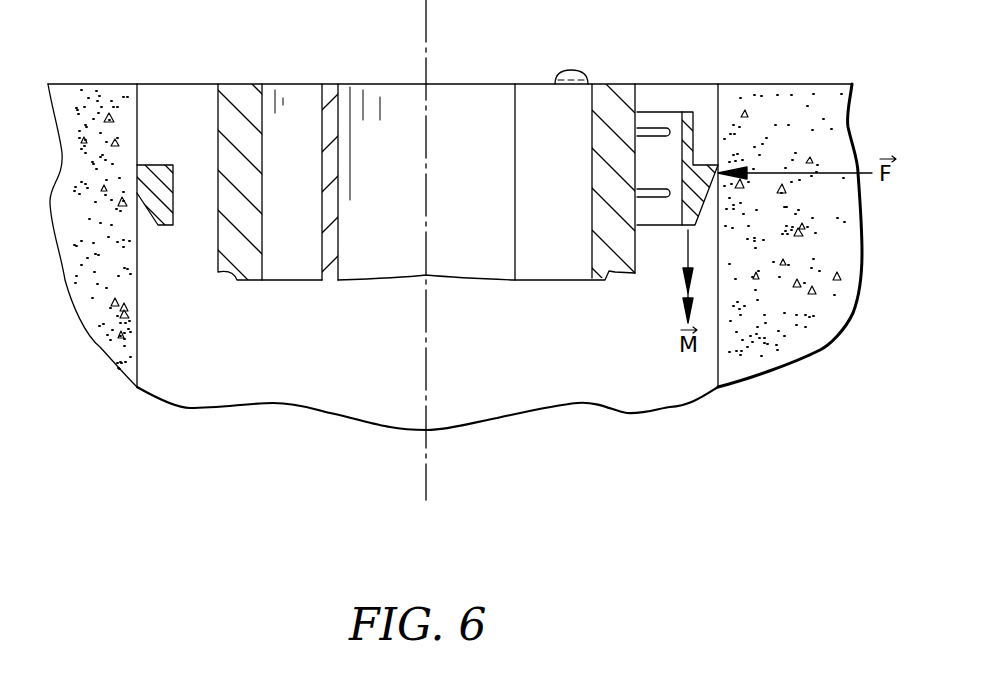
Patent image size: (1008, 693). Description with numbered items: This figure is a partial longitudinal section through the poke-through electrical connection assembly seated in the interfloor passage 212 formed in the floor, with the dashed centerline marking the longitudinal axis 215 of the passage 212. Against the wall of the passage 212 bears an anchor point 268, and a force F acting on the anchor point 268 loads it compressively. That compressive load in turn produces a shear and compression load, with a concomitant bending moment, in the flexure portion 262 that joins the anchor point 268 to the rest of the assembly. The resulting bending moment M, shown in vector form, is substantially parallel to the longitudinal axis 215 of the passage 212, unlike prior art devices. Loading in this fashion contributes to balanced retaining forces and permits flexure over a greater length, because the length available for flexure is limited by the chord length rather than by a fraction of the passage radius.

The interfloor passage 212 is at (238, 380).
The longitudinal axis 215 is at (427, 37).
The flexure portion 262 is at (660, 230).
The anchor point 268 is at (712, 168).